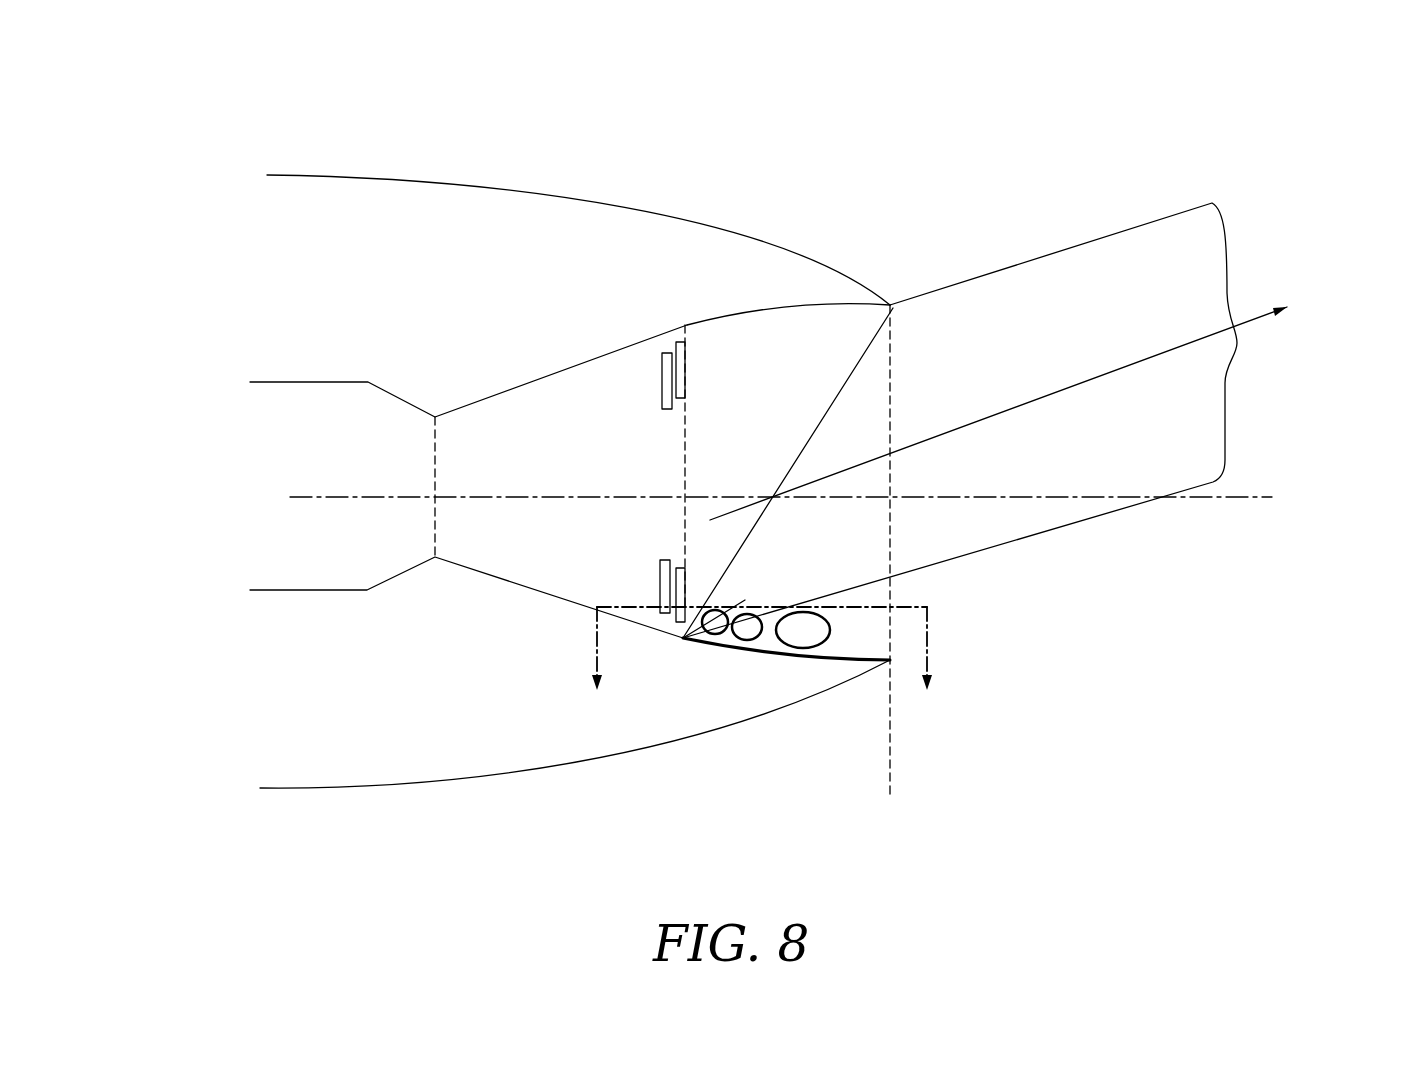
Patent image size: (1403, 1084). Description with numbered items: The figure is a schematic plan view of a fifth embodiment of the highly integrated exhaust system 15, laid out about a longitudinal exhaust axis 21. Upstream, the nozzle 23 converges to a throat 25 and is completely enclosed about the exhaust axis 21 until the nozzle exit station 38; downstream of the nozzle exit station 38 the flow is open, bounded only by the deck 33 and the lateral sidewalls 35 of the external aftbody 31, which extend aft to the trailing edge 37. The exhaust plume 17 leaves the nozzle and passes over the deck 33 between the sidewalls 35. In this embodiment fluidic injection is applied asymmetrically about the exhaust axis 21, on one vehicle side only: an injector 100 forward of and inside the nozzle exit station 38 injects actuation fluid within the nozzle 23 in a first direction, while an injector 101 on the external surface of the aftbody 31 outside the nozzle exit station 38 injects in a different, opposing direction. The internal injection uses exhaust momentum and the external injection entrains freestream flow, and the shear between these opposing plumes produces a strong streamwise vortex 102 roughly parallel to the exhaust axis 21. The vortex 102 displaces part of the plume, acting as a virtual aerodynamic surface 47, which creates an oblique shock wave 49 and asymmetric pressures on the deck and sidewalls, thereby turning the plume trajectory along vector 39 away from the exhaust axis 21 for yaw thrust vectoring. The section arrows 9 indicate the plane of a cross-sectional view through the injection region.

The section line 9- 9 is at (762, 668).
The highly integrated exhaust system 15 is at (1166, 120).
The exhaust plume 17 is at (1237, 343).
The exhaust axis 21 is at (1255, 500).
The nozzle 23 is at (372, 373).
The throat 25 is at (433, 467).
The external aftbody 31 is at (762, 228).
The deck 33 is at (873, 473).
The sidewalls 35 is at (713, 327).
The trailing edge 37 is at (892, 410).
The nozzle exit station 38 is at (682, 487).
The vector 39 is at (1253, 317).
The virtual aerodynamic surface 47 is at (771, 592).
The shock wave 49 is at (800, 453).
The injector 100 is at (662, 387).
The injector 101 is at (685, 380).
The streamwise vortex 102 is at (807, 617).